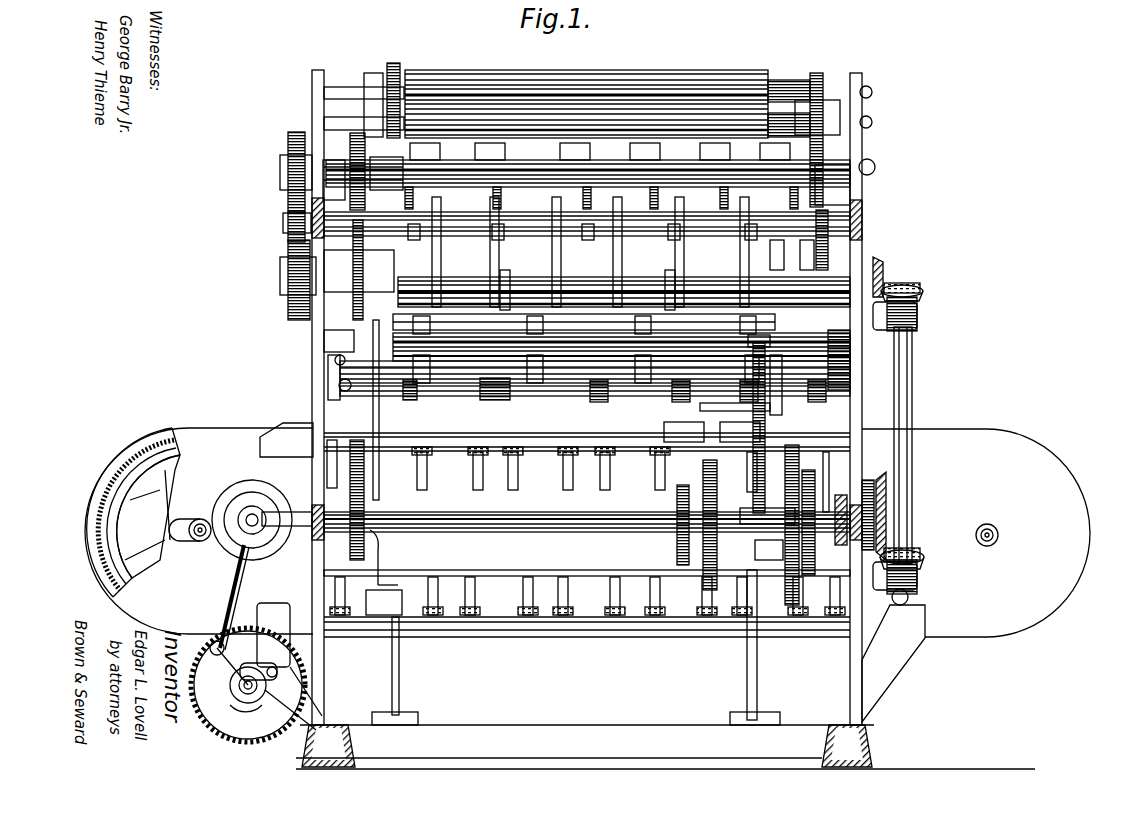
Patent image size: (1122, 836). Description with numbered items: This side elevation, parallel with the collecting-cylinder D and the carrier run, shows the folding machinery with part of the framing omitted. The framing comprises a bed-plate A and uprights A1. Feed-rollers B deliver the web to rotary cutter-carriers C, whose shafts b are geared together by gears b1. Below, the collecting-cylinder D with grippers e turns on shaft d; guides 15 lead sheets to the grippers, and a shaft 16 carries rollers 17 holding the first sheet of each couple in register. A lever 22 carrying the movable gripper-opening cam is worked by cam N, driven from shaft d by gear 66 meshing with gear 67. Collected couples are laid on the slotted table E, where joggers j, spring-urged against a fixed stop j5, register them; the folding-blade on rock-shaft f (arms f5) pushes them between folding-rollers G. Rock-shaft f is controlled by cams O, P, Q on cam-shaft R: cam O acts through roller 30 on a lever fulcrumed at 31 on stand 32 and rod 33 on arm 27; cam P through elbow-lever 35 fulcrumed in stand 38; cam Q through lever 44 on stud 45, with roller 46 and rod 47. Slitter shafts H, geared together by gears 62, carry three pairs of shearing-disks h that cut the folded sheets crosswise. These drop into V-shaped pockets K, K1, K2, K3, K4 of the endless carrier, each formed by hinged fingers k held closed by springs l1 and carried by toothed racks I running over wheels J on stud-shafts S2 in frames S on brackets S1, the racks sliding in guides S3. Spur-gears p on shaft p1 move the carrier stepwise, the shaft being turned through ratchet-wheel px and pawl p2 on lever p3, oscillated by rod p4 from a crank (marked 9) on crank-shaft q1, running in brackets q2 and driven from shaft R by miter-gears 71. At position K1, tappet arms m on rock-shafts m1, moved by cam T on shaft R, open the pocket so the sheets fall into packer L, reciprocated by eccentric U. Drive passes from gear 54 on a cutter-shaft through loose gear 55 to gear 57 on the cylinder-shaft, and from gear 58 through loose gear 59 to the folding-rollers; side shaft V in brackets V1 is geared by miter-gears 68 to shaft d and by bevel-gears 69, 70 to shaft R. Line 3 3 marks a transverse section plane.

The main frame A is at (665, 419).
The frame side plates A1 is at (322, 380).
The main roller B is at (585, 118).
The feed roller C is at (588, 175).
The roller D is at (624, 280).
The bar E is at (584, 319).
The roller G is at (475, 355).
The shaft H is at (560, 378).
The sector gear I is at (140, 460).
The wheel J is at (148, 516).
The fingers K is at (520, 596).
The finger K1 is at (738, 472).
The finger K2 is at (629, 468).
The finger K3 is at (542, 468).
The finger K4 is at (450, 470).
The gear L is at (721, 525).
The screw shaft N is at (775, 410).
The gear O is at (345, 500).
The gear P is at (769, 525).
The gear Q is at (818, 522).
The shaft R is at (538, 528).
The side panel S is at (587, 532).
The bracket S1 is at (928, 416).
The pivot S2 is at (999, 536).
The rail S3 is at (571, 540).
The gear T is at (680, 500).
The standard U is at (747, 632).
The vertical shaft V is at (906, 377).
The bearing V1 is at (906, 314).
The section line 3 is at (721, 80).
The disc 9 is at (262, 492).
The finger 15 is at (537, 252).
The finger 16 is at (516, 252).
The finger 17 is at (662, 252).
The shaft 22 is at (587, 241).
The rod 27 is at (588, 404).
The lever 30 is at (380, 553).
The block 31 is at (418, 599).
The post 32 is at (399, 671).
The rod 33 is at (402, 413).
The post 35 is at (776, 615).
The foot 38 is at (770, 673).
The rod 44 is at (836, 482).
The collar 45 is at (850, 455).
The collar 46 is at (838, 497).
The gear 47 is at (855, 362).
The gear 54 is at (290, 135).
The gear 55 is at (286, 220).
The gear 57 is at (288, 272).
The gear 58 is at (362, 302).
The bearing 59 is at (339, 327).
The rod 62 is at (791, 391).
The gear 66 is at (831, 244).
The gear 67 is at (822, 163).
The bevel gear 68 is at (890, 285).
The bevel gear 69 is at (912, 554).
The bevel gear 70 is at (890, 490).
The pin 71 is at (270, 505).
The bearing b is at (876, 167).
The bearing b1 is at (840, 160).
The gear d is at (380, 280).
The arm e is at (587, 284).
The arm f is at (635, 345).
The arm f5 is at (455, 300).
The arm h is at (581, 410).
The bracket j is at (528, 330).
The lever j5 is at (342, 386).
The finger k is at (541, 528).
The foot l1 is at (470, 620).
The block m is at (701, 429).
The bar m1 is at (735, 407).
The gear p is at (240, 686).
The arm p1 is at (245, 690).
The pawl p2 is at (258, 657).
The pin p3 is at (229, 663).
The connecting rod p4 is at (241, 597).
The arm px is at (240, 690).
The crank q1 is at (248, 518).
The crank q2 is at (288, 550).